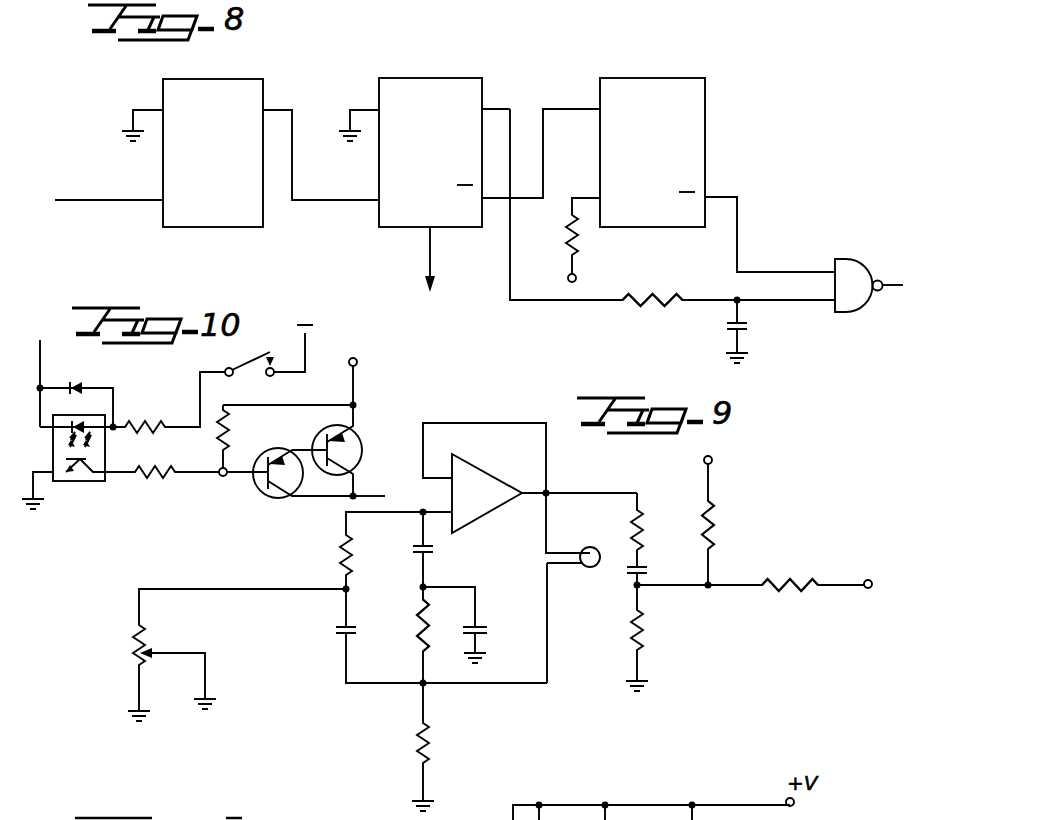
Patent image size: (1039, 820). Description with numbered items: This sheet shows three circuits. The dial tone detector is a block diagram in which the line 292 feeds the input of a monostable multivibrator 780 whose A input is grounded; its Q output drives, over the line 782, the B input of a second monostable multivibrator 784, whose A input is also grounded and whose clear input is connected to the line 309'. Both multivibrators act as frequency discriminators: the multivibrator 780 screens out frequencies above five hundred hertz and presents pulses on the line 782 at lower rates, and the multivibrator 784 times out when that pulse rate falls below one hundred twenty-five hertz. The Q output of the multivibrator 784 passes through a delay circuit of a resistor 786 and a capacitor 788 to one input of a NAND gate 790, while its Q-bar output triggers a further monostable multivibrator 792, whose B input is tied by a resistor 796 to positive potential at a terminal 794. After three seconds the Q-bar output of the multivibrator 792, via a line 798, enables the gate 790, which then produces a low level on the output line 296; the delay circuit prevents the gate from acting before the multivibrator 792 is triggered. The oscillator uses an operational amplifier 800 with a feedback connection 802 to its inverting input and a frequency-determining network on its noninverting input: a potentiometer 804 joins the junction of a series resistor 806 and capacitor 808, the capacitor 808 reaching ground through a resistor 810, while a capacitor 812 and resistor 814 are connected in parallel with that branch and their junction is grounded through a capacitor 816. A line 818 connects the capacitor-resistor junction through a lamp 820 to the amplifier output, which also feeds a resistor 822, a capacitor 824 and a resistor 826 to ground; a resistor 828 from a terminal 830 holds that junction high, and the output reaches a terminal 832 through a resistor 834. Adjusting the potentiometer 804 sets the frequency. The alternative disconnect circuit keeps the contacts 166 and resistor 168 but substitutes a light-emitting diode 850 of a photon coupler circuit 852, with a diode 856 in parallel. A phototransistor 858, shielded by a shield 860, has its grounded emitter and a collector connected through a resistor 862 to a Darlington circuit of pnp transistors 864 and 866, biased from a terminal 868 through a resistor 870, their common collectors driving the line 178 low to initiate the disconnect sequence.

In FIG. 8, the monostable multivibrator 780 is at (207, 228).
In FIG. 8, the line 292 is at (82, 200).
In FIG. 8, the line 782 is at (320, 201).
In FIG. 8, the monostable multivibrator 784 is at (402, 215).
In FIG. 8, the line 309' is at (462, 259).
In FIG. 8, the monostable multivibrator 792 is at (645, 227).
In FIG. 8, the resistor 796 is at (566, 232).
In FIG. 8, the terminal 794 is at (567, 276).
In FIG. 8, the line 798 is at (740, 231).
In FIG. 8, the resistor 786 is at (625, 309).
In FIG. 8, the capacitor 788 is at (746, 334).
In FIG. 8, the NAND gate 790 is at (853, 258).
In FIG. 8, the output line 296 is at (891, 283).
In FIG. 10, the photon coupler circuit 852 is at (65, 437).
In FIG. 10, the diode 856 is at (86, 386).
In FIG. 10, the light-emitting diode 850 is at (90, 421).
In FIG. 10, the resistor 168 is at (175, 414).
In FIG. 10, the contacts 166 is at (240, 352).
In FIG. 10, the shield 860 is at (107, 451).
In FIG. 10, the phototransistor 858 is at (84, 472).
In FIG. 10, the resistor 862 is at (160, 482).
In FIG. 10, the resistor 870 is at (232, 440).
In FIG. 10, the pnp transistor 864 is at (262, 498).
In FIG. 10, the pnp transistor 866 is at (355, 433).
In FIG. 10, the terminal 868 is at (354, 358).
In FIG. 10, the line 178 is at (368, 496).
In FIG. 9, the operational amplifier 800 is at (483, 478).
In FIG. 9, the feedback connection 802 is at (487, 422).
In FIG. 9, the resistor 806 is at (340, 558).
In FIG. 9, the capacitor 808 is at (338, 640).
In FIG. 9, the capacitor 812 is at (434, 553).
In FIG. 9, the resistor 814 is at (420, 620).
In FIG. 9, the capacitor 816 is at (480, 623).
In FIG. 9, the resistor 810 is at (433, 745).
In FIG. 9, the potentiometer 804 is at (132, 658).
In FIG. 9, the lamp 820 is at (590, 567).
In FIG. 9, the line 818 is at (549, 660).
In FIG. 9, the resistor 822 is at (643, 516).
In FIG. 9, the capacitor 824 is at (641, 569).
In FIG. 9, the resistor 826 is at (646, 643).
In FIG. 9, the resistor 828 is at (718, 515).
In FIG. 9, the terminal 830 is at (713, 463).
In FIG. 9, the resistor 834 is at (778, 580).
In FIG. 9, the terminal 832 is at (866, 590).